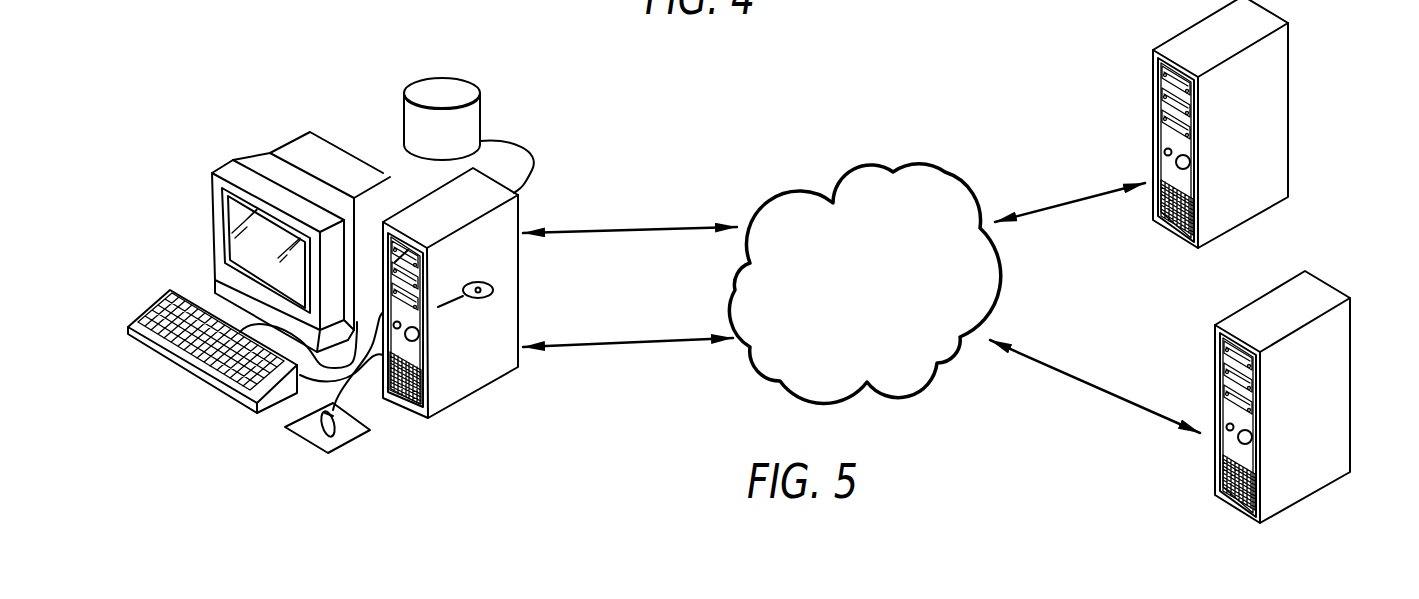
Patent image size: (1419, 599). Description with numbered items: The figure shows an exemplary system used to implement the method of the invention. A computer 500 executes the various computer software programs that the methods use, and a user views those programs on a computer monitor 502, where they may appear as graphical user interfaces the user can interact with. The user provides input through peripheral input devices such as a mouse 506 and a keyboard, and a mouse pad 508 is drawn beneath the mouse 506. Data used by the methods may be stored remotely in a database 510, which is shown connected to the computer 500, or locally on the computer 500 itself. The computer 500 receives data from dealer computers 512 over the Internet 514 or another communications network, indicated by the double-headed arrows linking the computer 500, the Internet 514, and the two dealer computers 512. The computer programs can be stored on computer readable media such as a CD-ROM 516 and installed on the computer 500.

The computer 500 is at (473, 348).
The computer monitor 502 is at (223, 167).
The mouse 506 is at (200, 370).
The mouse 508 is at (333, 427).
The database 510 is at (480, 112).
The dealer computers 512 is at (1243, 165).
The Internet 514 is at (947, 170).
The CD-ROM 516 is at (490, 287).